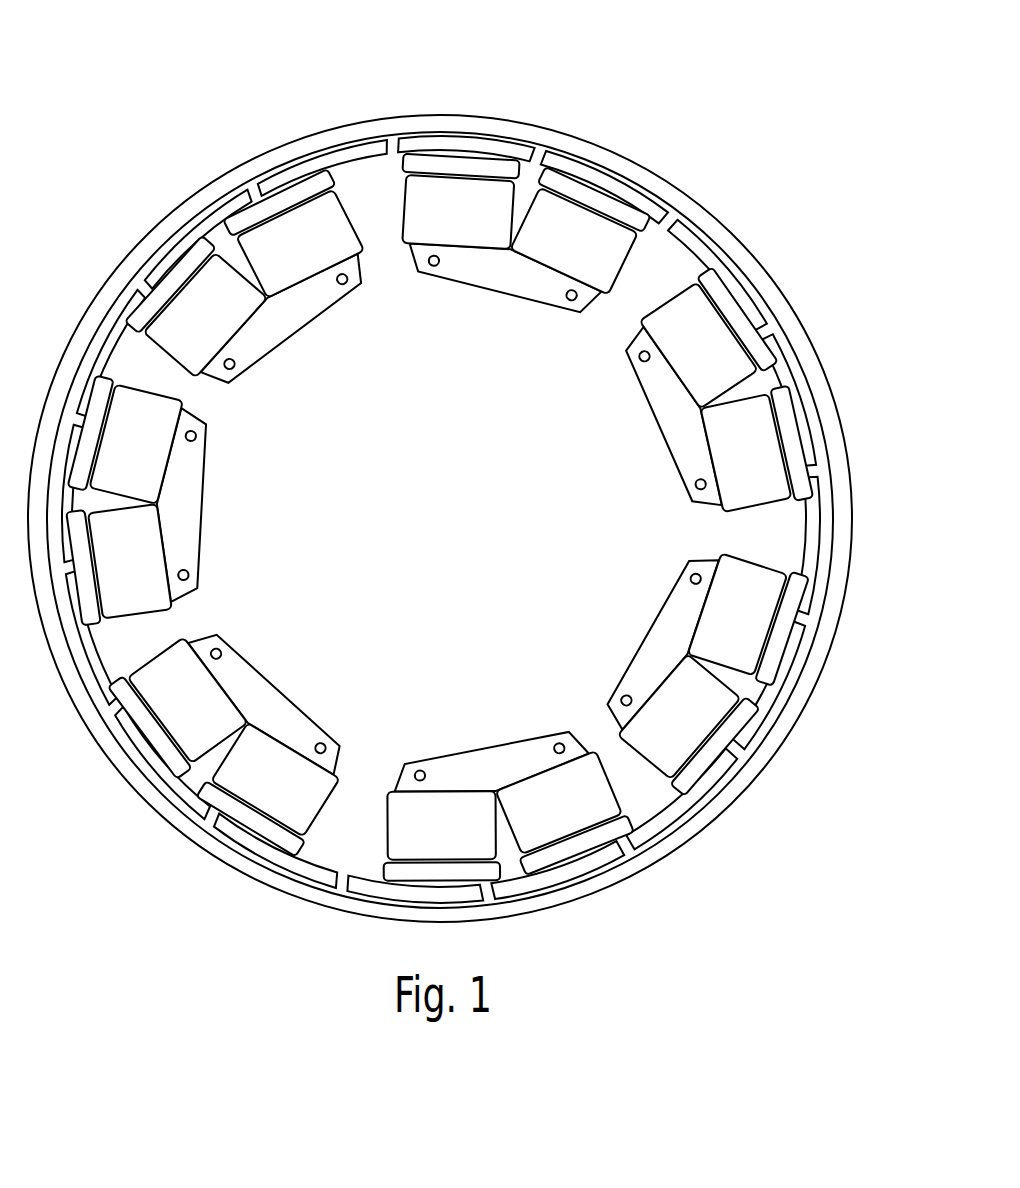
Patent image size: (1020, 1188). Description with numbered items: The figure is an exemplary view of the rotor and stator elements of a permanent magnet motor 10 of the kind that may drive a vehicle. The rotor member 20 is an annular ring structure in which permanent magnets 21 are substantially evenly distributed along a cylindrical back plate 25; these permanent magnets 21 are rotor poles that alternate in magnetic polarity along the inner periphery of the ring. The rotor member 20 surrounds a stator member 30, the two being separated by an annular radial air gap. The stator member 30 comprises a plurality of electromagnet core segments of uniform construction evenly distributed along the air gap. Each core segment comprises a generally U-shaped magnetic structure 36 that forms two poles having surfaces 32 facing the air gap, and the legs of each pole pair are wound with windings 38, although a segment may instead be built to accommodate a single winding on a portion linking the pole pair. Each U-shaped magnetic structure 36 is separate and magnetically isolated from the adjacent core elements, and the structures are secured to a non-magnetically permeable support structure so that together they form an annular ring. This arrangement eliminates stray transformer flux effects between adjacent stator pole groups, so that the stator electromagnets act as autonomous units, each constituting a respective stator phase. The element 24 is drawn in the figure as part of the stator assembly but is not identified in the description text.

The electric motor stator assembly 10 is at (681, 31).
The housing ring assembly 20 is at (837, 367).
The back-iron segments 21 is at (692, 240).
The pole base plate 24 is at (535, 300).
The outer housing ring 25 is at (633, 162).
The pole assembly 30 is at (270, 462).
The pole shoe cap 32 is at (440, 167).
The fastener hole 36 is at (460, 250).
The pole body 38 is at (475, 192).